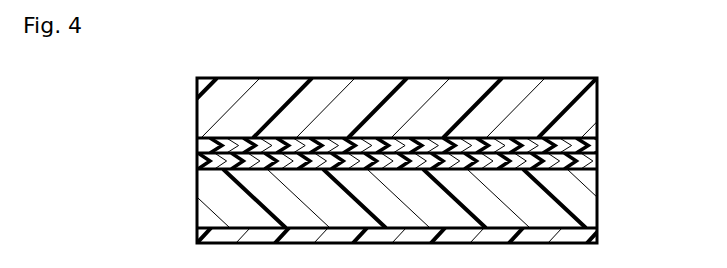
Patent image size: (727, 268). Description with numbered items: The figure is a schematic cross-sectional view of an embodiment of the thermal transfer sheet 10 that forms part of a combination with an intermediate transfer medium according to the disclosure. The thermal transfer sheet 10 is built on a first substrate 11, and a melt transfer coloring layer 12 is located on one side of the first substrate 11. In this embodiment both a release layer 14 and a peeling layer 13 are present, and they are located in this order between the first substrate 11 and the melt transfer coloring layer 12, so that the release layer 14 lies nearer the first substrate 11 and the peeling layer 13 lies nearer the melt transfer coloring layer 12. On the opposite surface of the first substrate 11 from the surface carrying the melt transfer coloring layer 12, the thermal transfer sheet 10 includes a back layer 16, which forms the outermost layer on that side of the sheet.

The thermal transfer sheet 10 is at (434, 163).
The first substrate 11 is at (583, 201).
The melt transfer coloring layer 12 is at (583, 112).
The peeling layer 13 is at (583, 139).
The release layer 14 is at (585, 161).
The back layer 16 is at (428, 231).